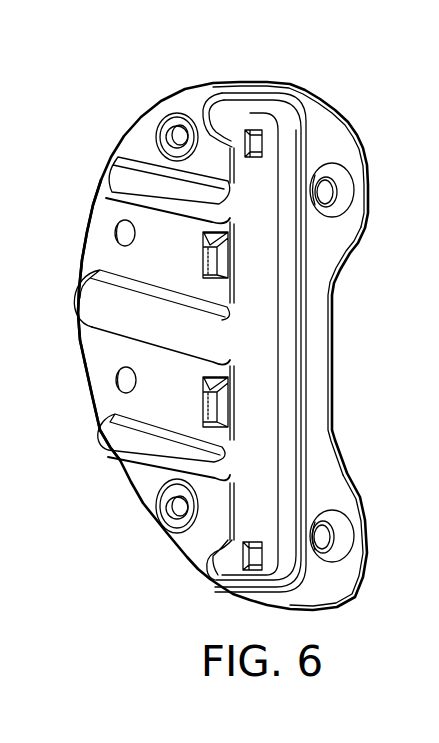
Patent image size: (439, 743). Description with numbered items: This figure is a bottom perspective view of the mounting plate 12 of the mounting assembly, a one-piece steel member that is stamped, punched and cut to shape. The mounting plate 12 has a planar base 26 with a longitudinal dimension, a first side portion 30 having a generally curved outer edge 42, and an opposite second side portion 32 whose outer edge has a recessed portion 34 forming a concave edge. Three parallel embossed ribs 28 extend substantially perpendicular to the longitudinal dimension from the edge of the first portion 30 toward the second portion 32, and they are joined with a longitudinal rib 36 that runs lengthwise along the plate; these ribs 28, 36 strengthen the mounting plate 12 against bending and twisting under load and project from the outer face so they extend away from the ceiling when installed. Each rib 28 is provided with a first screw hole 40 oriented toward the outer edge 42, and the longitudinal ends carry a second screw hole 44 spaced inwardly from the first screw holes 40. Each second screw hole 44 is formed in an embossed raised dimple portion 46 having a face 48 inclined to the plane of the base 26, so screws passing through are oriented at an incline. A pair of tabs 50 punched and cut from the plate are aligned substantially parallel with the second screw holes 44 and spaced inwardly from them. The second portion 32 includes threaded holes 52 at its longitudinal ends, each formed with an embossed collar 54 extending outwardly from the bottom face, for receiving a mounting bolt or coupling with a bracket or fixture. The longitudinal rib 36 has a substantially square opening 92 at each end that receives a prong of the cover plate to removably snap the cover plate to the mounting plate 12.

The mounting plate 12 is at (310, 82).
The planar base 26 is at (100, 248).
The ribs 28 is at (113, 183).
The first side portion 30 is at (140, 145).
The second side portion 32 is at (324, 138).
The recessed portion 34 is at (335, 373).
The longitudinal rib 36 is at (258, 295).
The first screw hole 40 is at (115, 230).
The outer edge 42 is at (90, 393).
The second screw hole 44 is at (175, 146).
The embossed raised dimple portion 46 is at (199, 147).
The face 48 is at (163, 124).
The tabs 50 is at (223, 258).
The threaded holes 52 is at (327, 192).
The embossed collar 54 is at (345, 205).
The opening 92 is at (257, 128).